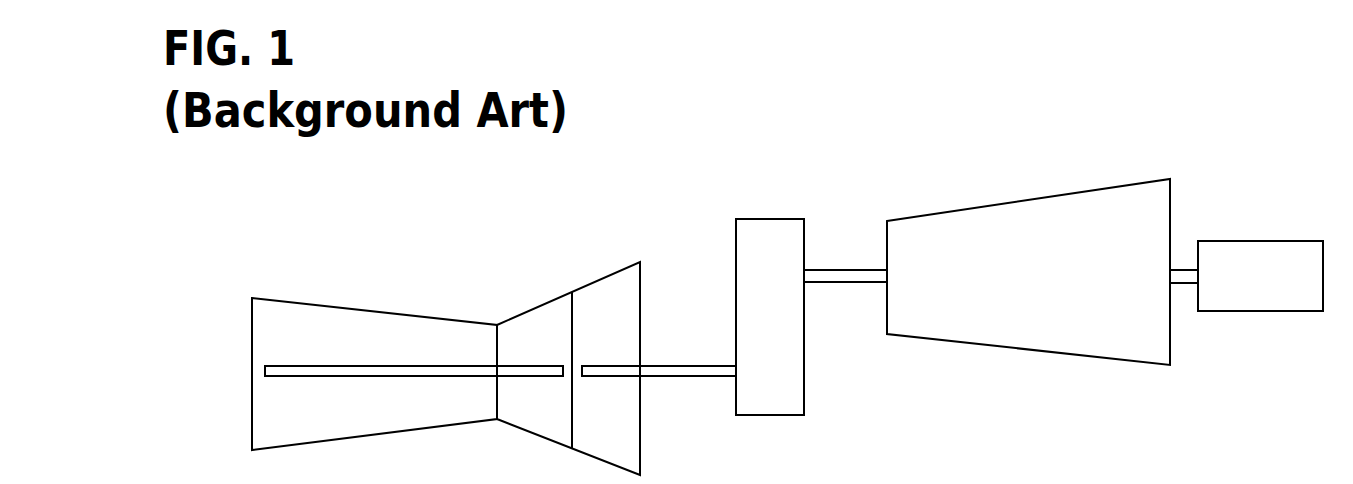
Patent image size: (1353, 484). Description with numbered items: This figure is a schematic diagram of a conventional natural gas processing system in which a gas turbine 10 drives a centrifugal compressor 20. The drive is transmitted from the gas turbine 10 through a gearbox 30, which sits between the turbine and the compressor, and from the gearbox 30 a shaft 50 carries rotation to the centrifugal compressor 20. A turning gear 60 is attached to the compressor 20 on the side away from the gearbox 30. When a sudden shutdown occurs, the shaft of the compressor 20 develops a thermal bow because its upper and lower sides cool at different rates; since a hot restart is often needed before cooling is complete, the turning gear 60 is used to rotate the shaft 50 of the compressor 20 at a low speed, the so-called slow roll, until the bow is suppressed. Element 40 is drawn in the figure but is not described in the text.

The gas turbine 10 is at (316, 303).
The centrifugal compressor 20 is at (957, 210).
The gearbox 30 is at (805, 402).
The low speed shaft (LSS) 40 is at (682, 379).
The shaft 50 is at (839, 287).
The turning gear 60 is at (1248, 240).